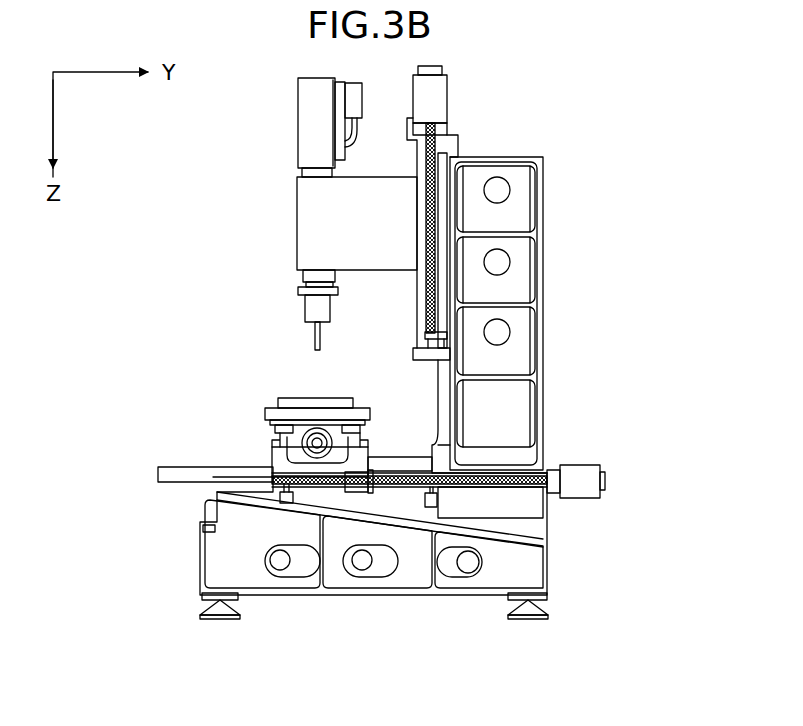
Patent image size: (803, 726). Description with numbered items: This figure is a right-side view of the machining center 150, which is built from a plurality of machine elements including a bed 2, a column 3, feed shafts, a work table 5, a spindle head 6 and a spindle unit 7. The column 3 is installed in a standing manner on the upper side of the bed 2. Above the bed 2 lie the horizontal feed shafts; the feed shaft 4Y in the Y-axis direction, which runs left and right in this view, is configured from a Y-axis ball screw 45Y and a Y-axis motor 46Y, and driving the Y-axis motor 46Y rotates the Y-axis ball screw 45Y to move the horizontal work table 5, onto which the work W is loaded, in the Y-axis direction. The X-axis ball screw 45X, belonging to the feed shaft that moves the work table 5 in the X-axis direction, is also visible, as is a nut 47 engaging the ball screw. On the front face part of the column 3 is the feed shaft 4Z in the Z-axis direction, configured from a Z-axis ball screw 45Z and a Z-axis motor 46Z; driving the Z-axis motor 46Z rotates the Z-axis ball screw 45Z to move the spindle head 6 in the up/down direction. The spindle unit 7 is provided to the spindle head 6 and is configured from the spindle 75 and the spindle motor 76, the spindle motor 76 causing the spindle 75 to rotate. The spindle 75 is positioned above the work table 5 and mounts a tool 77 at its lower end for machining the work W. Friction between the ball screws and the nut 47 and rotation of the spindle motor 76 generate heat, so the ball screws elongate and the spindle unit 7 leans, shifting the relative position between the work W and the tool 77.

The machining center 150 is at (616, 97).
The bed 2 is at (200, 560).
The column 3 is at (545, 329).
The feed shaft in the Z-axis direction 4Z is at (470, 136).
The feed shaft in the Y-axis direction 4Y is at (565, 448).
The Z-axis ball screw 45Z is at (432, 213).
The Y-axis ball screw 45Y is at (285, 480).
The X-axis ball screw 45X is at (318, 443).
The Z-axis motor 46Z is at (440, 94).
The Y-axis motor 46Y is at (588, 472).
The nut 47 is at (354, 472).
The work table 5 is at (268, 414).
The spindle head 6 is at (385, 176).
The spindle unit 7 is at (274, 201).
The spindle 75 is at (306, 275).
The spindle motor 76 is at (305, 127).
The tool 77 is at (313, 352).
The work W is at (313, 397).